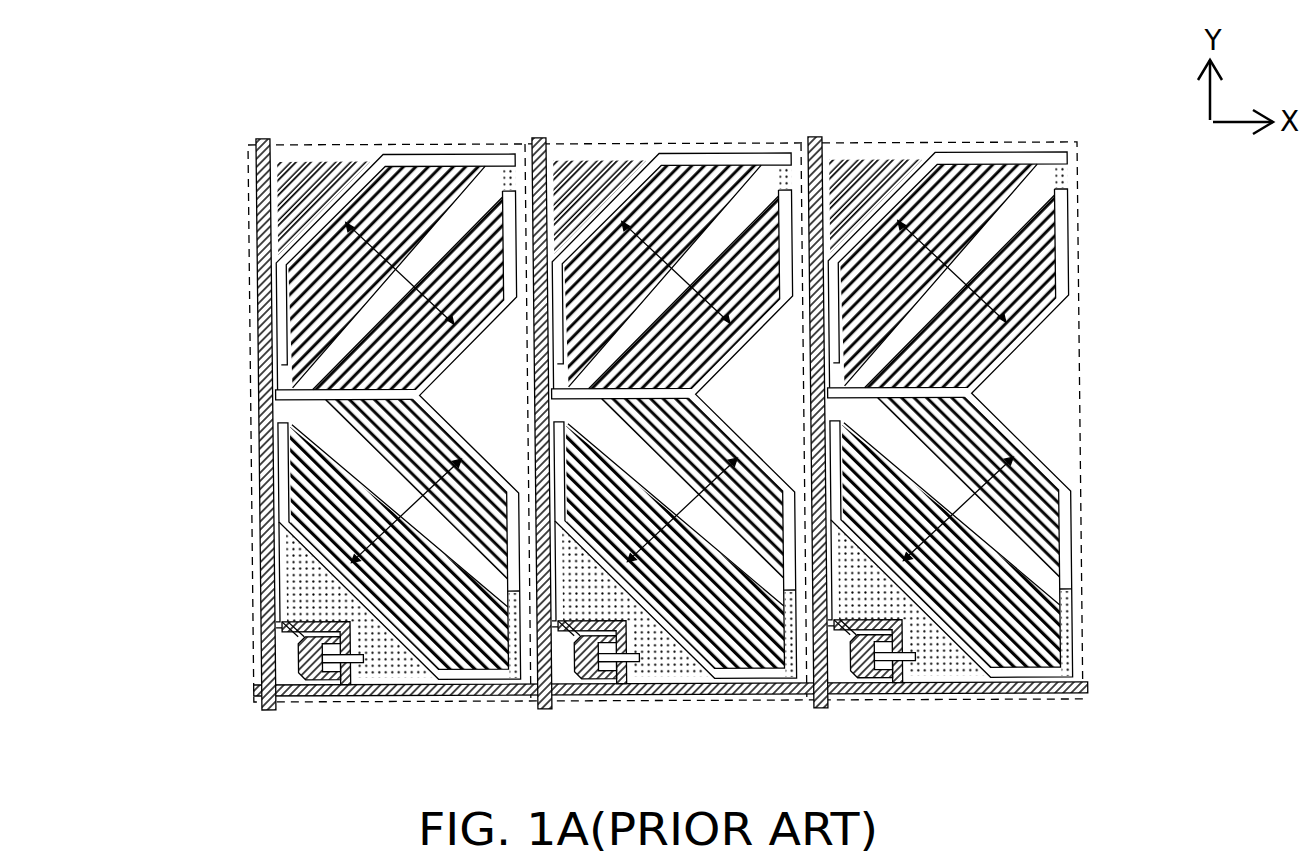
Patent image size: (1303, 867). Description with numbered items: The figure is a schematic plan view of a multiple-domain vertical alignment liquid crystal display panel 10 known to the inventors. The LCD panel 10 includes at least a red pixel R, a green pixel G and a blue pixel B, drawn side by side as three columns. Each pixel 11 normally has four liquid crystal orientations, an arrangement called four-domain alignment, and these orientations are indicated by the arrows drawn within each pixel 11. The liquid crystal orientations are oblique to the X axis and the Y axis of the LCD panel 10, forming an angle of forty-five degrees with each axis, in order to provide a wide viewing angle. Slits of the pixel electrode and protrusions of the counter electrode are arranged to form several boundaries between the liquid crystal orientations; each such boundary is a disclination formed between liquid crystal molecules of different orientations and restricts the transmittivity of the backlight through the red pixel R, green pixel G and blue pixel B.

The MVA LCD panel 10 is at (50, 83).
The pixel 11 is at (274, 140).
The red pixel R is at (396, 456).
The green pixel G is at (672, 455).
The blue pixel B is at (948, 454).